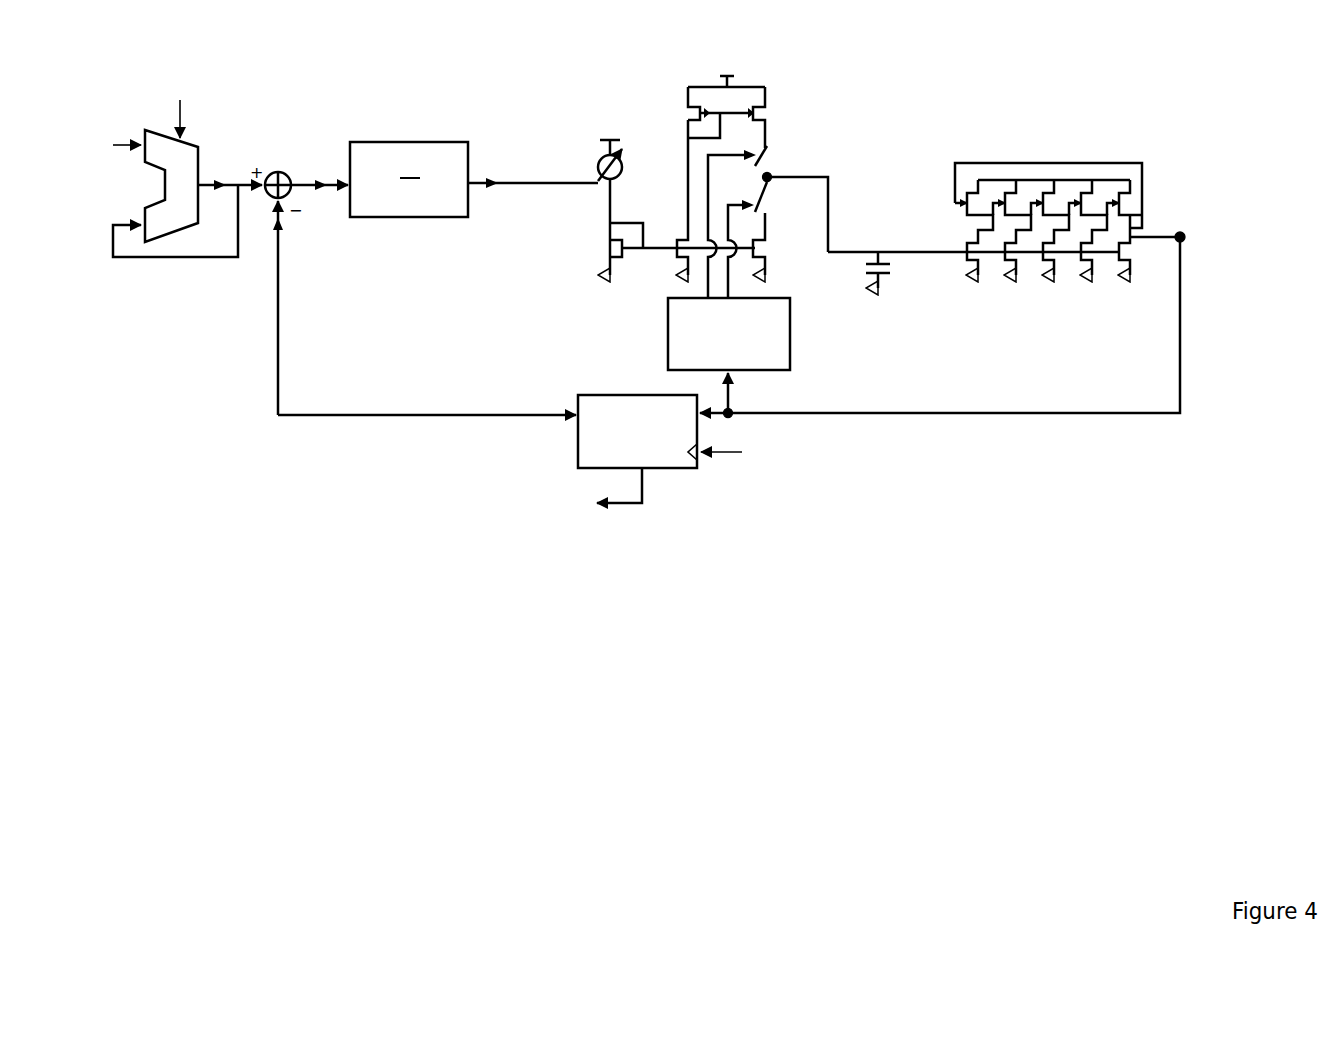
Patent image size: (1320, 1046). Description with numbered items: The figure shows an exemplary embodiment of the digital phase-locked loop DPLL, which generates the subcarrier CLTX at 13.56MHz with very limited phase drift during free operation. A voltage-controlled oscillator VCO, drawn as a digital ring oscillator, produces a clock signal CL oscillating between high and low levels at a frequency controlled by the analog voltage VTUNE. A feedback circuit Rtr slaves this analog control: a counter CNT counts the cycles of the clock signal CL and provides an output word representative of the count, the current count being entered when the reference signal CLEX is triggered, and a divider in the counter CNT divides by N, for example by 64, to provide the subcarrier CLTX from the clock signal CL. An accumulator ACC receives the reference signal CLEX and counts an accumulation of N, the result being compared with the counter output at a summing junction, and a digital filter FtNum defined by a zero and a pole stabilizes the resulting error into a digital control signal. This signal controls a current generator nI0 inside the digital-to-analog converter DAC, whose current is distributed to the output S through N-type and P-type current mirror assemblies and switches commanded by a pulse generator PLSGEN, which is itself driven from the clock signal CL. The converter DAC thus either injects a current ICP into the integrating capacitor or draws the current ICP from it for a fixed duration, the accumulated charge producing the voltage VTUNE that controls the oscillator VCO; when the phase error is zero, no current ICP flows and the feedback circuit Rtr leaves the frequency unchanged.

The accumulator ACC is at (192, 283).
The divider value N 64 is at (112, 147).
The reference signal CLEX is at (486, 270).
The feedback circuit Rtr is at (345, 436).
The digital filter FtNum is at (372, 218).
The current generator nI0 is at (598, 174).
The digital-to-analog converter DAC is at (800, 108).
The output S is at (774, 172).
The current ICP is at (806, 177).
The analog voltage control signal VTUNE is at (973, 235).
The voltage-controlled oscillator VCO is at (1166, 171).
The clock signal CL is at (1188, 237).
The pulse generator PLSGEN is at (729, 355).
The counter CNT is at (637, 431).
The subcarrier signal CLTX is at (622, 506).
The subcarrier frequency 13.56MHz is at (579, 497).
The digital phase-locked loop DPLL is at (1042, 72).